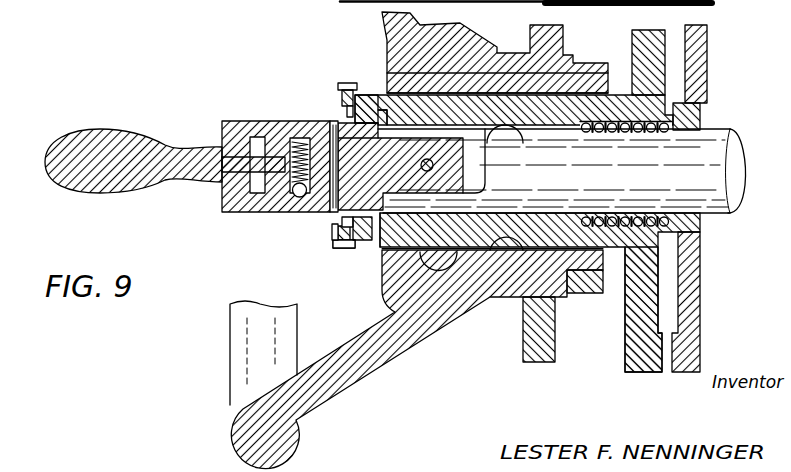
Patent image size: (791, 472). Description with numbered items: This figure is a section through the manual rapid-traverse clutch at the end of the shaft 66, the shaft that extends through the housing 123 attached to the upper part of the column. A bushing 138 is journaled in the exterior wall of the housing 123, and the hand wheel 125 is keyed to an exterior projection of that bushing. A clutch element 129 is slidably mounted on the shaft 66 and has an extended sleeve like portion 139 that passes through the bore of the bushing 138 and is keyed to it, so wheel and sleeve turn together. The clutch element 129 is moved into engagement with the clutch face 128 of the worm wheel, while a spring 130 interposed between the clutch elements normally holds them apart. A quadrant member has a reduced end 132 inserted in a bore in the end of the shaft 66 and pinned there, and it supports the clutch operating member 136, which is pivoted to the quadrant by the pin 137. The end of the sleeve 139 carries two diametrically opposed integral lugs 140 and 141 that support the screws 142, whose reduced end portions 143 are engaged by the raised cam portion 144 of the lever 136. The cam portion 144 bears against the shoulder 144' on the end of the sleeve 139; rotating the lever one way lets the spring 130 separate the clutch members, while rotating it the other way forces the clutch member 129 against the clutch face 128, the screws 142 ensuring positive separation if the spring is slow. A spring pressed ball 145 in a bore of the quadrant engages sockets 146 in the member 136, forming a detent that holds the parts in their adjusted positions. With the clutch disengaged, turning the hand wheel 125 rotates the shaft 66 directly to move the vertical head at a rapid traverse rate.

The shaft 66 is at (735, 156).
The housing 123 is at (530, 343).
The hand wheel 125 is at (383, 365).
The clutch face 128 is at (674, 373).
The clutch element 129 is at (641, 373).
The spring 130 is at (665, 115).
The reduced end 132 is at (393, 28).
The clutch operating member 136 is at (268, 121).
The pin 137 is at (333, 121).
The bushing 138 is at (592, 284).
The sleeve like portion 139 is at (377, 247).
The lug 140 is at (334, 241).
The lug 141 is at (339, 90).
The screws 142 is at (350, 83).
The reduced end portion 143 is at (333, 229).
The raised cam portion 144 is at (321, 227).
The shoulder 144' is at (352, 246).
The spring pressed ball 145 is at (288, 208).
The sockets 146 is at (294, 212).